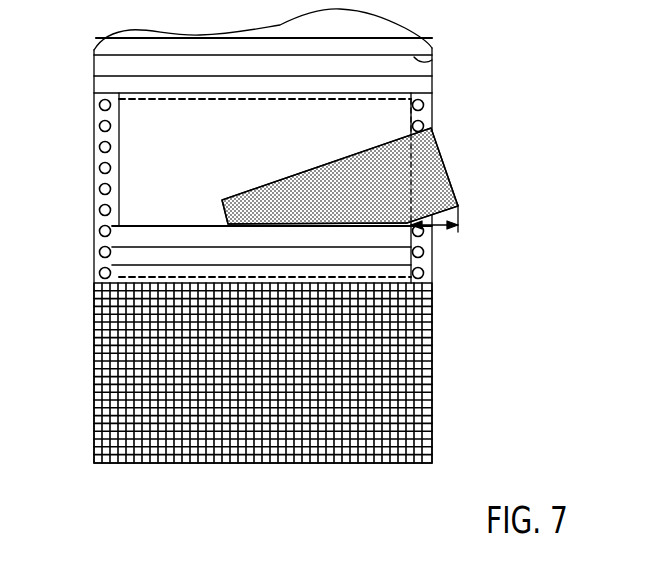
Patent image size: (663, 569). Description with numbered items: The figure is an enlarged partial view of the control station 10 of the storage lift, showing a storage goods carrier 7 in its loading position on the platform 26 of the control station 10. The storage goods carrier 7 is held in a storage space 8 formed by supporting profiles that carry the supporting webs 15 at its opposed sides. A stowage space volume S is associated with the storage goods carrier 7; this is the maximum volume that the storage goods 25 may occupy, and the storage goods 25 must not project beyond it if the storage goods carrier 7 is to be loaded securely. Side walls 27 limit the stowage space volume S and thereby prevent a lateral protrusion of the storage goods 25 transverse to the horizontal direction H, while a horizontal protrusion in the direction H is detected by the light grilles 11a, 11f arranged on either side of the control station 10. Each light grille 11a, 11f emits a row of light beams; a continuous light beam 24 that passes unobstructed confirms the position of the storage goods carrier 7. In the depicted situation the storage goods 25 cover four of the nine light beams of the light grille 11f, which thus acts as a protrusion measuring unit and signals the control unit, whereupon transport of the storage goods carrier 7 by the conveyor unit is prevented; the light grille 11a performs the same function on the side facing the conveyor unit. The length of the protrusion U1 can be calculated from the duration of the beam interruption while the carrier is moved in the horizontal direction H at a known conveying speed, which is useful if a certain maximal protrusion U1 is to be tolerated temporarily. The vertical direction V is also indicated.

The control station 10 is at (483, 129).
The storage space 8 is at (432, 66).
The light grille 11a is at (97, 140).
The light grille 11f is at (427, 112).
The side walls 27 is at (268, 134).
The stowage space volume S is at (155, 101).
The storage goods carrier 7 is at (128, 234).
The supporting webs 15 is at (130, 247).
The continuous light beam 24 is at (97, 105).
The storage goods 25 is at (442, 158).
The protrusion U1 is at (440, 230).
The platform 26 is at (425, 318).
The vertical direction V is at (46, 330).
The horizontal direction H is at (48, 446).